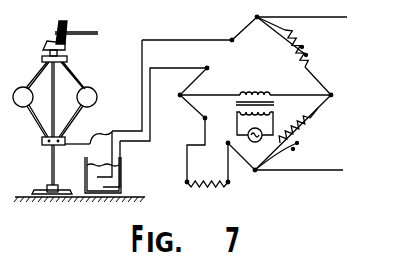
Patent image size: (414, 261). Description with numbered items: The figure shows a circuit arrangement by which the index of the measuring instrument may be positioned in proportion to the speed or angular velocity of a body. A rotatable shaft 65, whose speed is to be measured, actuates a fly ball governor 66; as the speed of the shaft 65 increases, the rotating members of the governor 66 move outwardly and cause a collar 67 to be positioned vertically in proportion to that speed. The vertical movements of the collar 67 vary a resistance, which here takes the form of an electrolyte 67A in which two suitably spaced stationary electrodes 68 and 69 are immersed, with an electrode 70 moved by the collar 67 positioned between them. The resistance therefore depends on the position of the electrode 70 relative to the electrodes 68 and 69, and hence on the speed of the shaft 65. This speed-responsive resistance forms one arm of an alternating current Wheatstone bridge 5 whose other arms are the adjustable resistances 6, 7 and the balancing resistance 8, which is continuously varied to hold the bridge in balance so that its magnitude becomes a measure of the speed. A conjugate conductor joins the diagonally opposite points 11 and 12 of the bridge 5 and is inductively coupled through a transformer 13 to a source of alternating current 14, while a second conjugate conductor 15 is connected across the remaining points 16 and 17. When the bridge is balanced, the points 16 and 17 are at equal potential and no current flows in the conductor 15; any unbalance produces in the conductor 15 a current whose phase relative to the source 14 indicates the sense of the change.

The alternating current Wheatstone bridge 5 is at (263, 79).
The adjustable resistance 6 is at (310, 63).
The adjustable resistance 7 is at (304, 136).
The balancing resistance 8 is at (195, 178).
The bridge point 11 is at (185, 100).
The bridge point 12 is at (333, 97).
The transformer 13 is at (236, 101).
The source of alternating current 14 is at (248, 135).
The second conjugate conductor 15 is at (323, 185).
The bridge point 16 is at (257, 20).
The bridge point 17 is at (256, 172).
The rotatable shaft 65 is at (93, 34).
The fly ball governor 66 is at (110, 122).
The collar 67 is at (42, 141).
The electrolyte 67A is at (88, 198).
The stationary electrode 68 is at (120, 152).
The stationary electrode 69 is at (121, 177).
The electrode 70 is at (85, 168).